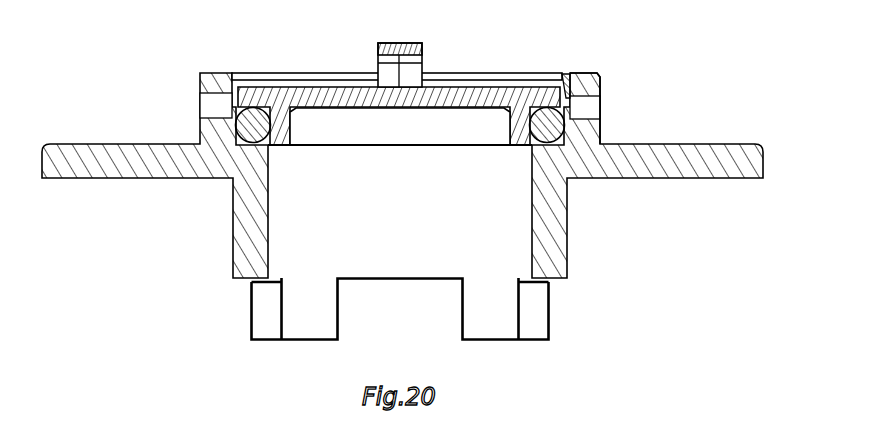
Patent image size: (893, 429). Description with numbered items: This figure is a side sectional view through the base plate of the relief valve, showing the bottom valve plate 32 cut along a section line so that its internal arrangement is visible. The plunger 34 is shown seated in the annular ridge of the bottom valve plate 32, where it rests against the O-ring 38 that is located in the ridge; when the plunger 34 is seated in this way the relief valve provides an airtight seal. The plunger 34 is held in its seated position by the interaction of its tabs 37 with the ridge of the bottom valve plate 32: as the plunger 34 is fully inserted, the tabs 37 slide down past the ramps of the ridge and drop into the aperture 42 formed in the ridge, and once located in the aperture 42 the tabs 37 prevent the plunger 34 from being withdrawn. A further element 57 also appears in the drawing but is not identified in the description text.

The bottom valve plate 32 is at (720, 158).
The plunger 34 is at (490, 95).
The tabs 37 is at (568, 100).
The aperture 42 is at (583, 98).
The O-ring 38 is at (600, 112).
The bracket 57 is at (487, 323).